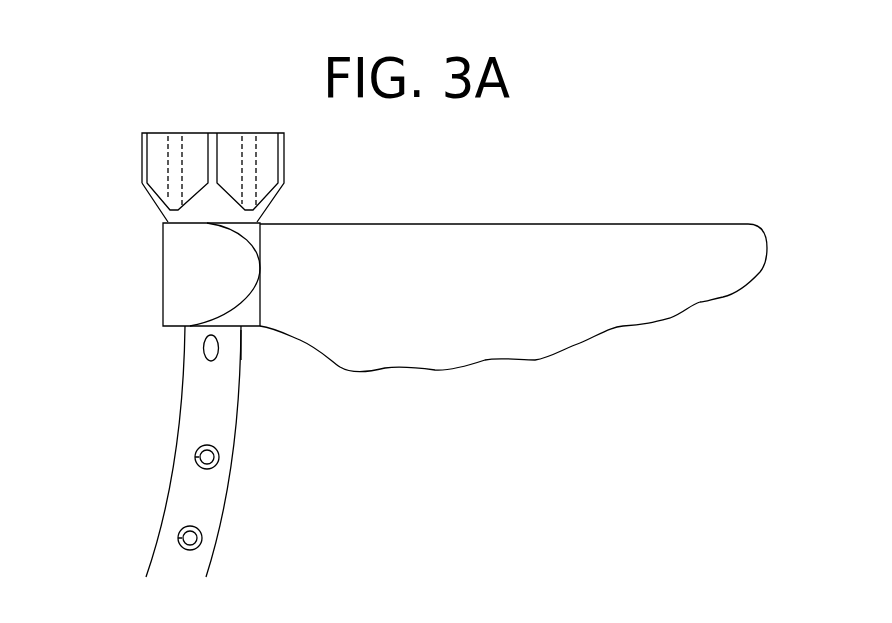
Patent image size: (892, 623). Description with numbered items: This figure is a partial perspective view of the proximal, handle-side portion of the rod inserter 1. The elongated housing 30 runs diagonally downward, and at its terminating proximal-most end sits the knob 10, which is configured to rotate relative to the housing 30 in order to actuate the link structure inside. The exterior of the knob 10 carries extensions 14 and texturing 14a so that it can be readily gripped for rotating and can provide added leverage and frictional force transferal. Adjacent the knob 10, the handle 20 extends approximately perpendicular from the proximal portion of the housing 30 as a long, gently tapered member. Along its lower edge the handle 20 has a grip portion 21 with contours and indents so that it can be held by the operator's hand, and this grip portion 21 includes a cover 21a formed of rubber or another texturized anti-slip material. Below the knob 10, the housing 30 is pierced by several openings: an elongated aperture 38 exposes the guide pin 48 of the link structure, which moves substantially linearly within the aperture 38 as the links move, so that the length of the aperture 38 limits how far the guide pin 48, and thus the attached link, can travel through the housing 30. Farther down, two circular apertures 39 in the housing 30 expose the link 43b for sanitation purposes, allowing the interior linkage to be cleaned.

The rod inserter 1 is at (80, 382).
The knob 10 is at (142, 157).
The extensions 14 is at (162, 133).
The texturing 14a is at (284, 167).
The handle 20 is at (483, 238).
The grip portion 21 is at (498, 328).
The cover 21a is at (607, 327).
The housing 30 is at (226, 505).
The aperture 38 is at (220, 348).
The apertures 39 is at (219, 456).
The link 43b is at (195, 460).
The guide pin 48 is at (204, 340).